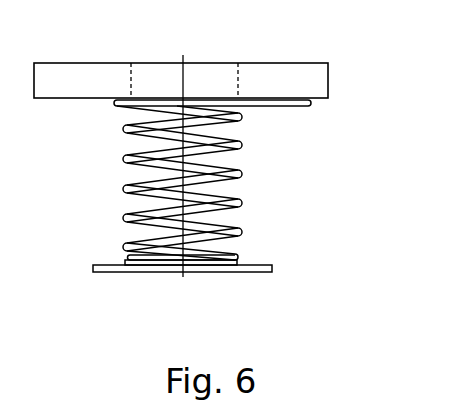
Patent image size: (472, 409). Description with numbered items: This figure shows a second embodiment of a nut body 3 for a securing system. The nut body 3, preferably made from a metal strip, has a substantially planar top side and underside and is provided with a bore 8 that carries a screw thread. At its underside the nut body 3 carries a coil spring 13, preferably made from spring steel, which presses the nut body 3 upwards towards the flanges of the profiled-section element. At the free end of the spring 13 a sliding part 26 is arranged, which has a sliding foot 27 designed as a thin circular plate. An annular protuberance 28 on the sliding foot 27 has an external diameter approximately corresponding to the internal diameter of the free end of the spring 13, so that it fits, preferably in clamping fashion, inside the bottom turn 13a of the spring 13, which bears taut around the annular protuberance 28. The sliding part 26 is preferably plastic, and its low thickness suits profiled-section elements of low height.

The nut body 3 is at (317, 85).
The bore 8 is at (203, 63).
The coil spring 13 is at (240, 148).
The bottom turn 13a is at (232, 273).
The sliding part 26 is at (221, 220).
The sliding foot 27 is at (272, 265).
The annular protuberance 28 is at (228, 252).